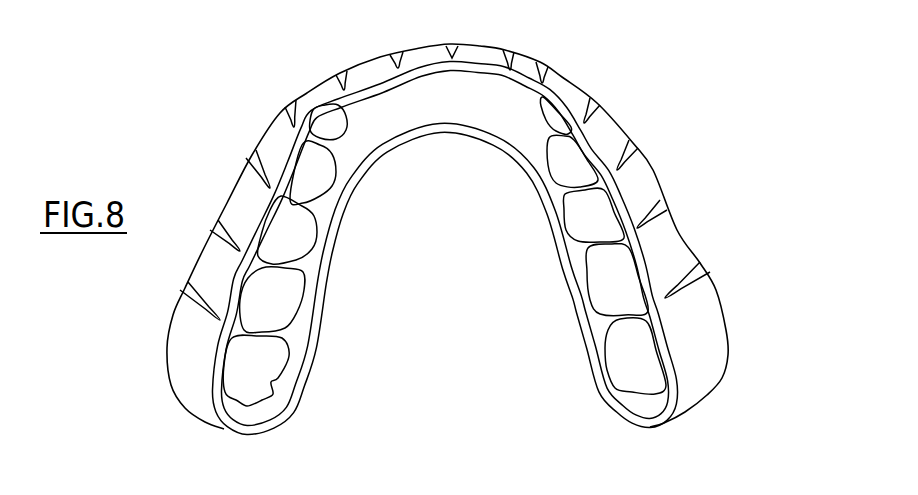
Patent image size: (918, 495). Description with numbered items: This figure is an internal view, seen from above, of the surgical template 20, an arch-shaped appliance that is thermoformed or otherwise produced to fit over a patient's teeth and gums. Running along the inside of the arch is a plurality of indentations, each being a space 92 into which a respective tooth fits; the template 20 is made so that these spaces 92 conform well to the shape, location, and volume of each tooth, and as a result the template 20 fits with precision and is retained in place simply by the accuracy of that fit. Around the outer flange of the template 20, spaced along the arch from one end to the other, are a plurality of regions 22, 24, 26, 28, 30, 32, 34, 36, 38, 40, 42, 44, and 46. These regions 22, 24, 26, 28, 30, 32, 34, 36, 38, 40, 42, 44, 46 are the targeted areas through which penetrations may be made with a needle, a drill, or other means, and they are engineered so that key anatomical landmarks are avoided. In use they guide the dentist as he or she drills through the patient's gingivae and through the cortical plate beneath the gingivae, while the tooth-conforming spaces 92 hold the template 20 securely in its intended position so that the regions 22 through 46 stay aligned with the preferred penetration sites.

The surgical template 20 is at (475, 215).
The region 22 is at (705, 270).
The region 24 is at (662, 208).
The region 26 is at (635, 150).
The region 28 is at (595, 103).
The region 30 is at (545, 65).
The region 32 is at (508, 50).
The region 34 is at (452, 46).
The region 36 is at (400, 54).
The region 38 is at (343, 73).
The region 40 is at (291, 107).
The region 42 is at (257, 170).
The region 44 is at (222, 233).
The region 46 is at (190, 295).
The space 92 is at (633, 364).